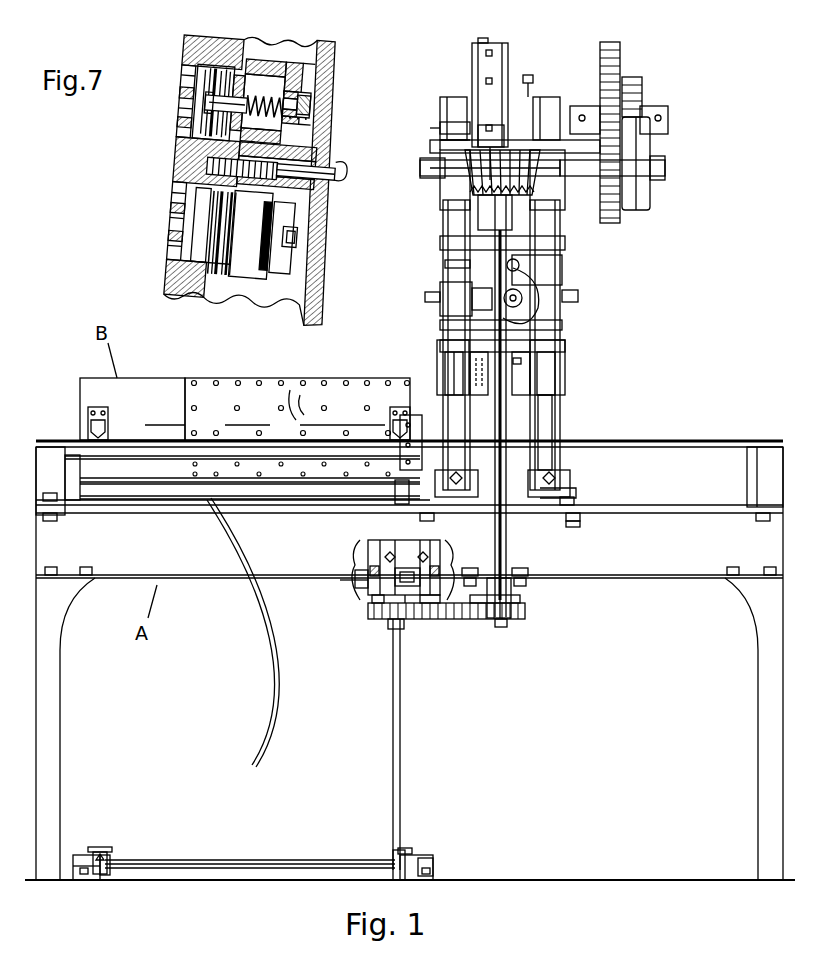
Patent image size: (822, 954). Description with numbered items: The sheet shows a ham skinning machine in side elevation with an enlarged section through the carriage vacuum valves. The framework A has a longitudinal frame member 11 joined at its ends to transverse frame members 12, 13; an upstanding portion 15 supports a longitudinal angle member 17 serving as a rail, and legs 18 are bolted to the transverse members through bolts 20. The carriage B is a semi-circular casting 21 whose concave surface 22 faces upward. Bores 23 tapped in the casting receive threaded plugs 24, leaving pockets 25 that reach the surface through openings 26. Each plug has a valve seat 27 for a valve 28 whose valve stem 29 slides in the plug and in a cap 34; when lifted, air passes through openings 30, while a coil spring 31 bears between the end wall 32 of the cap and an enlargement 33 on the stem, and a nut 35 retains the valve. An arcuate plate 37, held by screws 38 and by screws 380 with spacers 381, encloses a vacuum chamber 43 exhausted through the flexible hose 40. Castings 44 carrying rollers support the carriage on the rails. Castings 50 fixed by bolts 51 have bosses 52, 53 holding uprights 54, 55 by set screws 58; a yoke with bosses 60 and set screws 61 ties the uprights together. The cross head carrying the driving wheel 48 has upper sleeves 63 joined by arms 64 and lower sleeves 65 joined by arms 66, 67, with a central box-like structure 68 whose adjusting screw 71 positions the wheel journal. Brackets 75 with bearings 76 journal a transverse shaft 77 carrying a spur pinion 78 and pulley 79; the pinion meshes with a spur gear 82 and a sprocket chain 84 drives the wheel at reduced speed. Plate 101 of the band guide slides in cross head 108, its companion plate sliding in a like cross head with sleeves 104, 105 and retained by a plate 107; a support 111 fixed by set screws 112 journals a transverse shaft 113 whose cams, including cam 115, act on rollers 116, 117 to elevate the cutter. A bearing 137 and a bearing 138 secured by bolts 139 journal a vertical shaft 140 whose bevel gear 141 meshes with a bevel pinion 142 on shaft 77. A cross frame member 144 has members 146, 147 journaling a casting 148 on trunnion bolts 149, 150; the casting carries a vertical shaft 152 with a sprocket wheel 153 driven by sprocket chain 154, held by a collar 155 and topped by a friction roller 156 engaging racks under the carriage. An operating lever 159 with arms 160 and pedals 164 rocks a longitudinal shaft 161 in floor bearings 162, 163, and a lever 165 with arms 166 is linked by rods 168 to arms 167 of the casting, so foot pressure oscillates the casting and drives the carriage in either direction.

In FIG. 1, the longitudinal frame member 11 is at (700, 548).
In FIG. 1, the transverse frame member 12 is at (48, 437).
In FIG. 1, the transverse frame member 13 is at (760, 481).
In FIG. 1, the upstanding portion 15 is at (60, 485).
In FIG. 1, the longitudinal angle member 17 is at (700, 440).
In FIG. 1, the legs 18 is at (60, 738).
In FIG. 1, the bolts 20 is at (52, 578).
In FIG. 7, the casting 21 is at (188, 168).
In FIG. 1, the casting 21 is at (160, 380).
In FIG. 7, the concave surface 22 is at (190, 148).
In FIG. 7, the bores 23 is at (205, 70).
In FIG. 7, the threaded plugs 24 is at (225, 142).
In FIG. 7, the pockets 25 is at (205, 75).
In FIG. 7, the openings 26 is at (188, 88).
In FIG. 7, the valve seat 27 is at (298, 80).
In FIG. 7, the valve 28 is at (210, 105).
In FIG. 7, the valve stem 29 is at (305, 105).
In FIG. 7, the openings 30 is at (300, 95).
In FIG. 7, the coil spring 31 is at (292, 118).
In FIG. 7, the end wall 32 is at (335, 88).
In FIG. 7, the enlargement 33 is at (292, 130).
In FIG. 7, the cap 34 is at (300, 65).
In FIG. 7, the nut 35 is at (318, 112).
In FIG. 7, the arcuate plate 37 is at (305, 290).
In FIG. 1, the screws 38 is at (280, 383).
In FIG. 1, the flexible hose 40 is at (268, 676).
In FIG. 7, the vacuum chamber 43 is at (305, 215).
In FIG. 1, the castings 44 is at (110, 420).
In FIG. 1, the driving wheel 48 is at (472, 62).
In FIG. 1, the castings 50 is at (565, 507).
In FIG. 1, the bolts 51 is at (575, 492).
In FIG. 1, the boss 52 is at (455, 497).
In FIG. 1, the boss 53 is at (570, 485).
In FIG. 1, the upright 54 is at (405, 414).
In FIG. 1, the upright 55 is at (548, 433).
In FIG. 1, the set screws 58 is at (462, 500).
In FIG. 1, the bosses 60 is at (545, 202).
In FIG. 1, the set screws 61 is at (440, 205).
In FIG. 1, the upper sleeves 63 is at (548, 140).
In FIG. 1, the arms 64 is at (470, 127).
In FIG. 1, the lower sleeves 65 is at (562, 265).
In FIG. 1, the arms 66 is at (535, 280).
In FIG. 1, the arms 67 is at (510, 245).
In FIG. 1, the box-like structure 68 is at (543, 96).
In FIG. 1, the adjusting screw 71 is at (527, 77).
In FIG. 1, the brackets 75 is at (562, 200).
In FIG. 1, the bearings 76 is at (440, 170).
In FIG. 1, the transverse shaft 77 is at (665, 168).
In FIG. 1, the spur pinion 78 is at (622, 180).
In FIG. 1, the pulley 79 is at (640, 172).
In FIG. 1, the spur gear 82 is at (618, 52).
In FIG. 1, the sprocket chain 84 is at (645, 96).
In FIG. 1, the plate 101 is at (445, 352).
In FIG. 1, the sleeve 104 is at (445, 366).
In FIG. 1, the sleeve 105 is at (558, 378).
In FIG. 1, the plate 107 is at (515, 383).
In FIG. 1, the cross head 108 is at (540, 352).
In FIG. 1, the support 111 is at (472, 312).
In FIG. 1, the set screws 112 is at (425, 297).
In FIG. 1, the transverse shaft 113 is at (535, 312).
In FIG. 1, the cam 115 is at (545, 332).
In FIG. 1, the roller 116 is at (578, 297).
In FIG. 1, the roller 117 is at (505, 326).
In FIG. 1, the bearing 137 is at (445, 263).
In FIG. 1, the bearing 138 is at (511, 600).
In FIG. 1, the bolts 139 is at (528, 572).
In FIG. 1, the vertical shaft 140 is at (508, 412).
In FIG. 1, the bevel gear 141 is at (490, 165).
In FIG. 1, the bevel pinion 142 is at (478, 140).
In FIG. 1, the cross frame member 144 is at (366, 556).
In FIG. 1, the member 146 is at (392, 570).
In FIG. 1, the member 147 is at (432, 600).
In FIG. 1, the casting 148 is at (358, 580).
In FIG. 1, the bolt 149 is at (372, 596).
In FIG. 1, the bolt 150 is at (458, 620).
In FIG. 1, the vertical shaft 152 is at (412, 606).
In FIG. 1, the sprocket wheel 153 is at (392, 630).
In FIG. 1, the sprocket chain 154 is at (510, 622).
In FIG. 1, the collar 155 is at (372, 541).
In FIG. 1, the roller 156 is at (392, 491).
In FIG. 1, the operating lever 159 is at (115, 862).
In FIG. 1, the arms 160 is at (106, 852).
In FIG. 1, the longitudinal shaft 161 is at (278, 860).
In FIG. 1, the bearing 162 is at (85, 880).
In FIG. 1, the bearing 163 is at (433, 860).
In FIG. 1, the pedals 164 is at (94, 847).
In FIG. 1, the lever 165 is at (392, 862).
In FIG. 1, the arms 166 is at (405, 850).
In FIG. 1, the arms 167 is at (374, 604).
In FIG. 1, the rods or links 168 is at (393, 760).
In FIG. 7, the screws 380 is at (322, 180).
In FIG. 1, the screws 380 is at (293, 405).
In FIG. 7, the spacers 381 is at (310, 190).